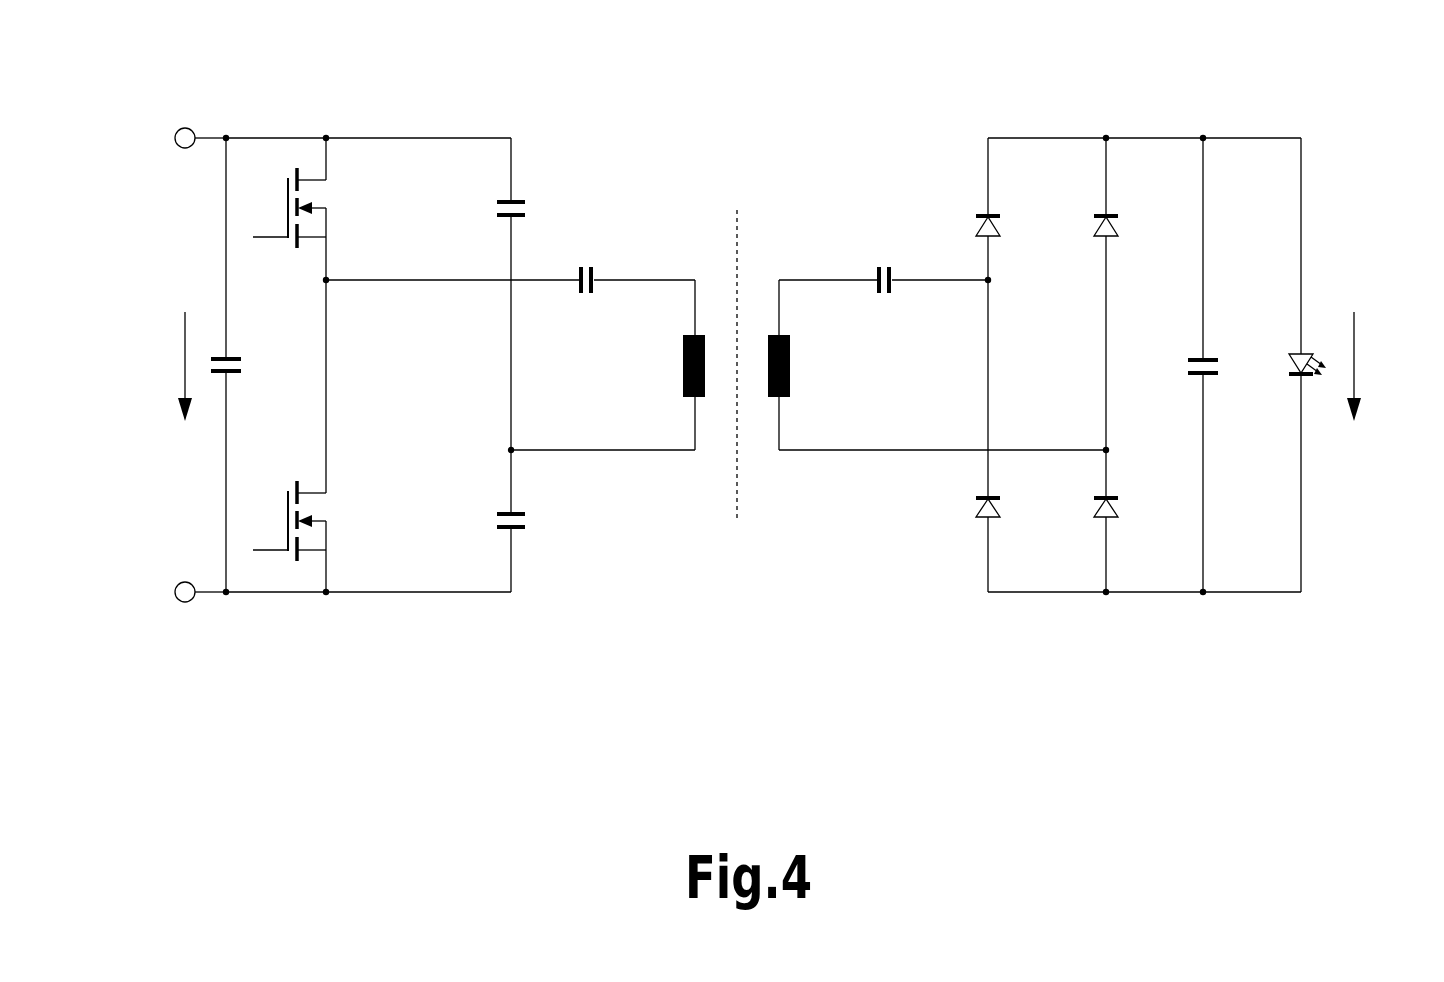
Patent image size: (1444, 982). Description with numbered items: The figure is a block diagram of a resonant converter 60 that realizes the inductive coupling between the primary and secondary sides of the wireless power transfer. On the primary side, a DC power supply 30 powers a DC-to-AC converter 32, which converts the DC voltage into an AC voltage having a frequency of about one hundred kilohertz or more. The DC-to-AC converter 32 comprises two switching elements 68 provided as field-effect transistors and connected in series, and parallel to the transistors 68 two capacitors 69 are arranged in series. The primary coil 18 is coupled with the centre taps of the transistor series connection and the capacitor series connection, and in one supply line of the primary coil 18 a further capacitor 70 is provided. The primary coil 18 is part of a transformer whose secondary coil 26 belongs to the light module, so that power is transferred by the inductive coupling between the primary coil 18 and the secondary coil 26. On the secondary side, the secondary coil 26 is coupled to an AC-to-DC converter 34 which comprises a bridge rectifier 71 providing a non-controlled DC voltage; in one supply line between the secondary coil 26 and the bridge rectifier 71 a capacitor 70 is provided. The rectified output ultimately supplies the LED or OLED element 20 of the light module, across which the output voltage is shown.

The primary coil 18 is at (682, 364).
The LED or OLED element 20 is at (1312, 350).
The secondary coil 26 is at (792, 364).
The DC power supply 30 is at (128, 383).
The DC-to-AC converter 32 is at (395, 620).
The AC-to-DC converter 34 is at (955, 511).
The resonant converter 60 is at (1121, 100).
The switching elements 68 is at (280, 185).
The capacitors 69 is at (495, 214).
The capacitor 70 is at (590, 262).
The bridge rectifier 71 is at (1120, 511).